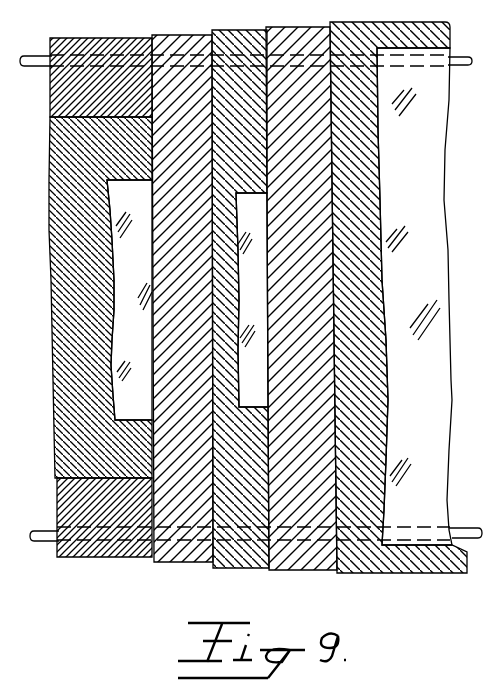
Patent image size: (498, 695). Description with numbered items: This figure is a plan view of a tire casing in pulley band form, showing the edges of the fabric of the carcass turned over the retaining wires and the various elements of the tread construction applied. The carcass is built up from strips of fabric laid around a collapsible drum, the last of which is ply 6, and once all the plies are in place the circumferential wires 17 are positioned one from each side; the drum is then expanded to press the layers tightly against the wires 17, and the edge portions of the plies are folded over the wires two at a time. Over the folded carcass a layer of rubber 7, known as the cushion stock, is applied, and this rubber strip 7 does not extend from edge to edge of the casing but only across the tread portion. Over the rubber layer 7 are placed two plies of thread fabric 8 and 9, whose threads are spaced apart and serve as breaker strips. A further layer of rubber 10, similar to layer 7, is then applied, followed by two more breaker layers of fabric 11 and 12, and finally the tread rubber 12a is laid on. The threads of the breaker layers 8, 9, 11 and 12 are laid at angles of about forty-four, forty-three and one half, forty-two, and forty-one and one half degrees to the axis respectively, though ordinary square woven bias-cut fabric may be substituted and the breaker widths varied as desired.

The ply 6 is at (100, 297).
The layer of rubber 7 is at (129, 300).
The ply of thread fabric 8 is at (182, 298).
The ply of thread fabric 9 is at (240, 299).
The layer of rubber 10 is at (252, 300).
The breaker layer of fabric 11 is at (301, 298).
The breaker layer of fabric 12 is at (398, 297).
The tread rubber 12a is at (414, 296).
The circumferential wires 17 is at (34, 68).